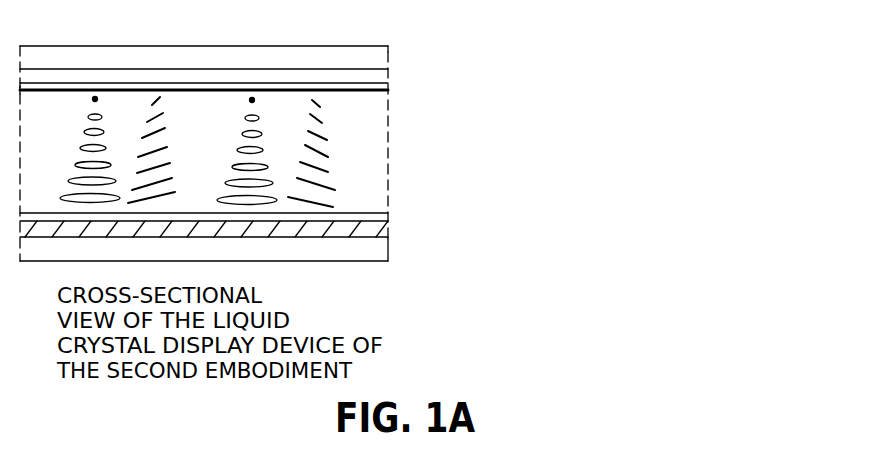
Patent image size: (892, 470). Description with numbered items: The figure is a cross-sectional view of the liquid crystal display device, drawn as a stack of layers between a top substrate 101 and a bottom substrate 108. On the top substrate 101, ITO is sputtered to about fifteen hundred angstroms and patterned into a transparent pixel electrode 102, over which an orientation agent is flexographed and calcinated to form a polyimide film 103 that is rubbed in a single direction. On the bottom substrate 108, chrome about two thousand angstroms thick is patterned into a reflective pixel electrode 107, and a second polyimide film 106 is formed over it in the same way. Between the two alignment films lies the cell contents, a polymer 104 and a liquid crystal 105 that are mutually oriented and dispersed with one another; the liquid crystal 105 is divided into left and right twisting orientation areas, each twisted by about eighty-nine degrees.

The top substrate 101 is at (375, 55).
The transparent pixel electrode 102 is at (368, 78).
The polyimide film 103 is at (383, 90).
The polymer 104 is at (262, 152).
The liquid crystal 105 is at (335, 189).
The polyimide film 106 is at (385, 214).
The reflective pixel electrode 107 is at (388, 230).
The bottom substrate 108 is at (368, 252).